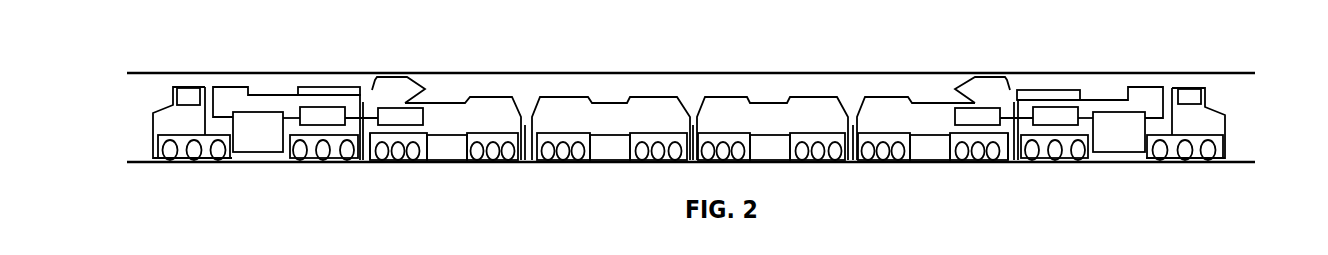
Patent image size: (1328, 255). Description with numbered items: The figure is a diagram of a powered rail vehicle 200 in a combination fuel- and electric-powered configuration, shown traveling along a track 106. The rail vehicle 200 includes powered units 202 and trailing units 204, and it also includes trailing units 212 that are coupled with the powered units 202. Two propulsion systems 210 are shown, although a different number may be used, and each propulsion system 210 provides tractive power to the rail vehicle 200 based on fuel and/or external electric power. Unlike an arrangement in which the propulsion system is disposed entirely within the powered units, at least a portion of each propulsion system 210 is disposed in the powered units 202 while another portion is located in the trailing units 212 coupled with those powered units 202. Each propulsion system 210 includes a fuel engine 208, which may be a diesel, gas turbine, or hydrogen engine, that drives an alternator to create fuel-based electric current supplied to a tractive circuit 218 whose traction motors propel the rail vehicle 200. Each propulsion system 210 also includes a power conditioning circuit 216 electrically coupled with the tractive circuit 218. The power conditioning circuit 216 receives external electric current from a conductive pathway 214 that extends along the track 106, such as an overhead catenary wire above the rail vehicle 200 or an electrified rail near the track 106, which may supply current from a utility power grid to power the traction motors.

The powered rail vehicle 200 is at (707, 111).
The track 106 is at (1234, 163).
The powered units 202 is at (227, 88).
The trailing units 204 is at (640, 97).
The fuel engines 208 is at (243, 143).
The propulsion systems 210 is at (425, 172).
The trailing units 212 is at (494, 97).
The conductive pathway 214 is at (815, 97).
The power conditioning circuit 216 is at (372, 90).
The tractive circuit 218 is at (333, 110).